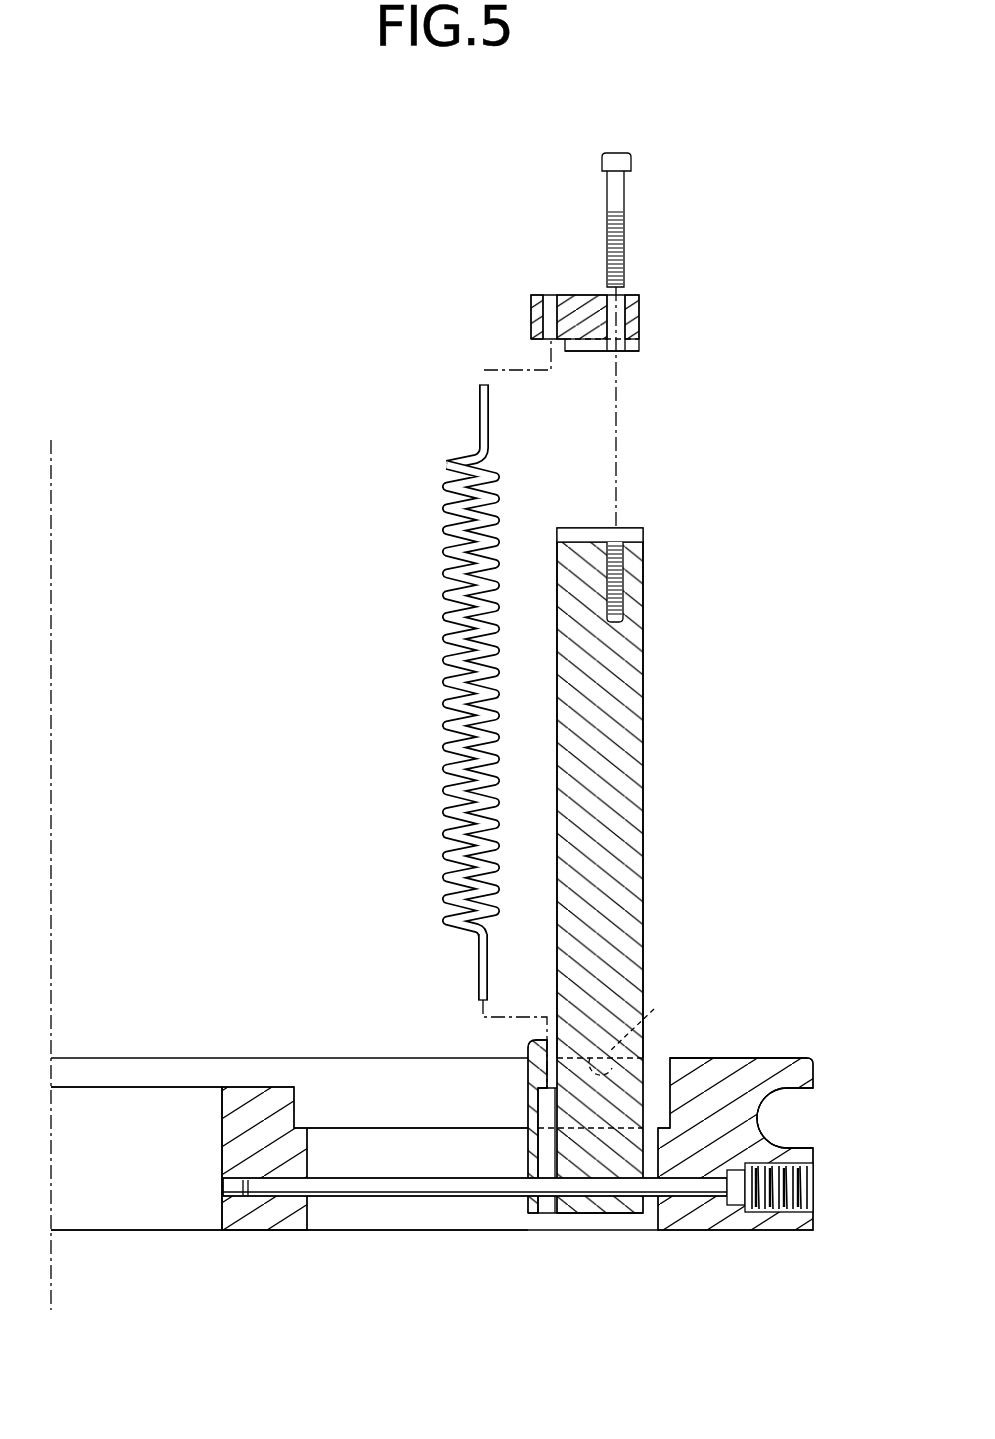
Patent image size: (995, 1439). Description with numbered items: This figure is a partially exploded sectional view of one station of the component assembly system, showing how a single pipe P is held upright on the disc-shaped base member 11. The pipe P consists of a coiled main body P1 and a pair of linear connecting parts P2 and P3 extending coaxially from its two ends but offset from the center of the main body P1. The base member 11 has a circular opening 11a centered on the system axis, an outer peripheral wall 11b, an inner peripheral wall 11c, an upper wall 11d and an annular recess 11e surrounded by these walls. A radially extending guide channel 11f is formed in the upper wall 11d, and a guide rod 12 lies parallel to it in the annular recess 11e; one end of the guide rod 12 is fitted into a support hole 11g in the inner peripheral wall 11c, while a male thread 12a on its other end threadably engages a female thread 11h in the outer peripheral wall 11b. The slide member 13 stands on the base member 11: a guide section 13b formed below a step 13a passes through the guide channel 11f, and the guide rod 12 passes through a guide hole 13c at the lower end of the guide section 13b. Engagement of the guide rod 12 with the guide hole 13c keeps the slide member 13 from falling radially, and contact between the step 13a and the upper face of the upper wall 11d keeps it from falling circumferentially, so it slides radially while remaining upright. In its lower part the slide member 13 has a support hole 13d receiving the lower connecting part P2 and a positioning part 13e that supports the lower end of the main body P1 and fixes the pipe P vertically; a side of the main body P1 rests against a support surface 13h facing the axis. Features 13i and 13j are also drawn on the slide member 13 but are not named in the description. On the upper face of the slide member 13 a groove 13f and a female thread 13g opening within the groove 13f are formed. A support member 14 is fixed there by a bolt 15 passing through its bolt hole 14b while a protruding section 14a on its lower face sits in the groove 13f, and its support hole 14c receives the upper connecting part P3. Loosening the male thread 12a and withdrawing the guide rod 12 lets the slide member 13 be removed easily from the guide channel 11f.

The base member 11 is at (446, 1127).
The circular opening 11a is at (140, 1187).
The outer peripheral wall 11b is at (763, 1070).
The inner peripheral wall 11c is at (251, 1127).
The upper wall 11d is at (703, 1058).
The annular recess 11e is at (466, 1172).
The guide channel 11f is at (413, 1057).
The support hole 11g is at (277, 1184).
The female thread 11h is at (771, 1167).
The guide rod 12 is at (523, 1188).
The male thread 12a is at (775, 1208).
The slide member 13 is at (588, 886).
The step 13a is at (648, 1027).
The guide section 13b is at (623, 1165).
The guide hole 13c is at (599, 1196).
The support hole 13d is at (545, 1080).
The positioning part 13e is at (534, 1038).
The groove 13f is at (583, 537).
The female thread 13g is at (620, 545).
The support surface 13h is at (556, 745).
The flange strip of block 13i is at (528, 1072).
The right side face of block 13j is at (645, 691).
The support member 14 is at (631, 332).
The protruding section 14a is at (587, 351).
The bolt hole 14b is at (618, 351).
The support hole 14c is at (553, 307).
The bolt 15 is at (618, 189).
The pipe P is at (422, 692).
The main body P1 is at (445, 689).
The connecting part P2 is at (488, 963).
The connecting part P3 is at (480, 428).